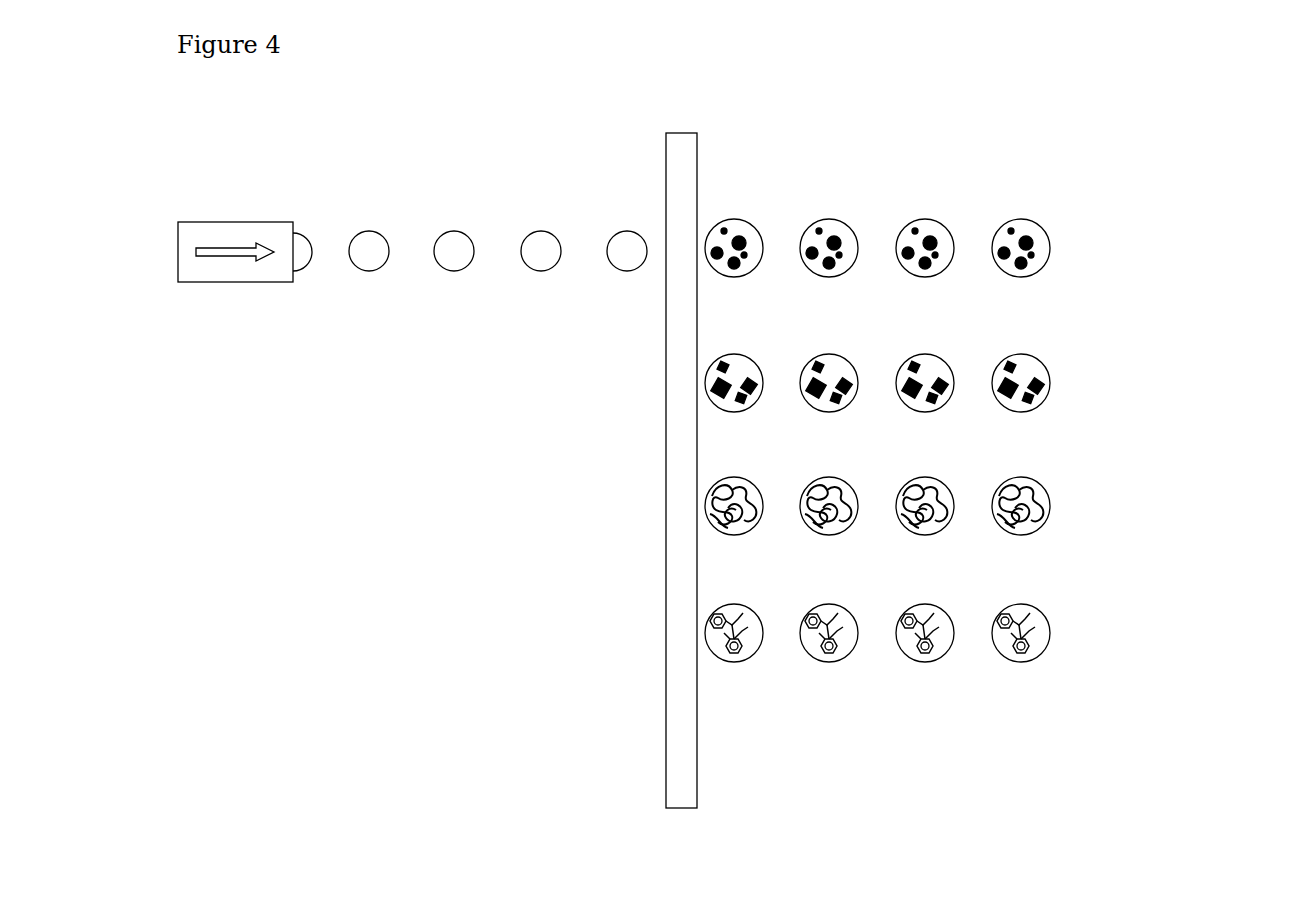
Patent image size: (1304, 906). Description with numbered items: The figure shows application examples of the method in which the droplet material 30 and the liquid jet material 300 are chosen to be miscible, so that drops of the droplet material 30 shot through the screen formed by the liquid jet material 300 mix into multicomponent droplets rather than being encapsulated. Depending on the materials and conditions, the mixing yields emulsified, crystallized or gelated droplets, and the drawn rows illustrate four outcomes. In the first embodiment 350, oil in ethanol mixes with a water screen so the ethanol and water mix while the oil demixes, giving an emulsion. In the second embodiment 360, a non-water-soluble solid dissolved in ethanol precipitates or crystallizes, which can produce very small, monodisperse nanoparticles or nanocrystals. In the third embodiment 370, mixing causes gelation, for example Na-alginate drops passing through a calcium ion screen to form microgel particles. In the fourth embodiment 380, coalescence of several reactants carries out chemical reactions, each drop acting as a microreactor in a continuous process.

The droplet material 30 is at (367, 251).
The liquid jet material 300 is at (682, 375).
The first embodiment 350 is at (1051, 229).
The second embodiment 360 is at (1058, 369).
The third embodiment 370 is at (1065, 495).
The fourth embodiment 380 is at (1072, 619).